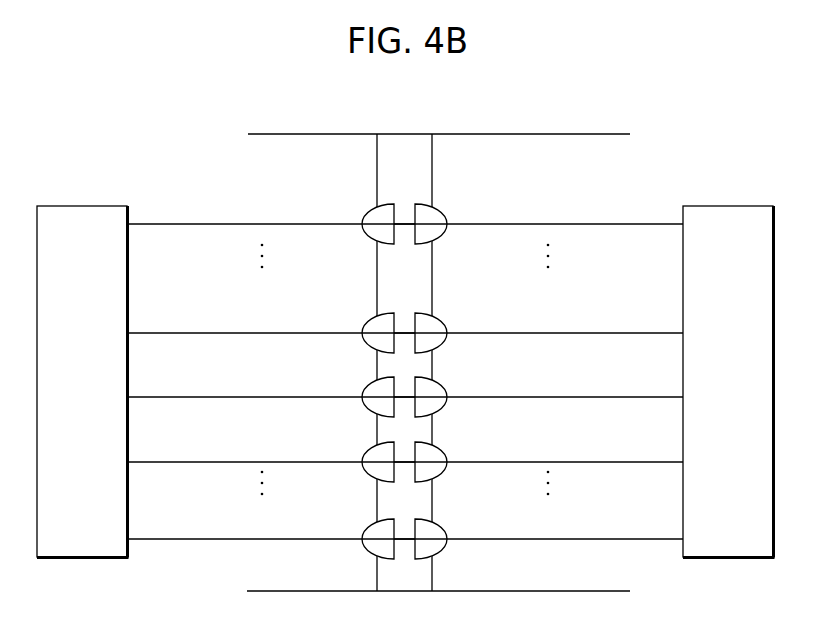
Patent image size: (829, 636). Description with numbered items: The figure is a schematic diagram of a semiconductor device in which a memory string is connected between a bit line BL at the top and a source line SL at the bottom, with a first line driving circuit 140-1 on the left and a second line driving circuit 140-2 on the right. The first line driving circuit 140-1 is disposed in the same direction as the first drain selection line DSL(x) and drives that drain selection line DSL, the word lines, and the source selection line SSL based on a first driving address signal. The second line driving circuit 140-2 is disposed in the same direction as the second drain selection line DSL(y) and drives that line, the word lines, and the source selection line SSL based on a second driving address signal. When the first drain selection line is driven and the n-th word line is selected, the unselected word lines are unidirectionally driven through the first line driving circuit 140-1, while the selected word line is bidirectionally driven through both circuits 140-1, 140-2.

The first line driving circuit 140-1 is at (70, 206).
The second line driving circuit 140-2 is at (717, 206).
The bit line BL is at (477, 136).
The source line SL is at (489, 594).
The drain selection line DSL is at (405, 210).
The source selection line SSL is at (405, 526).